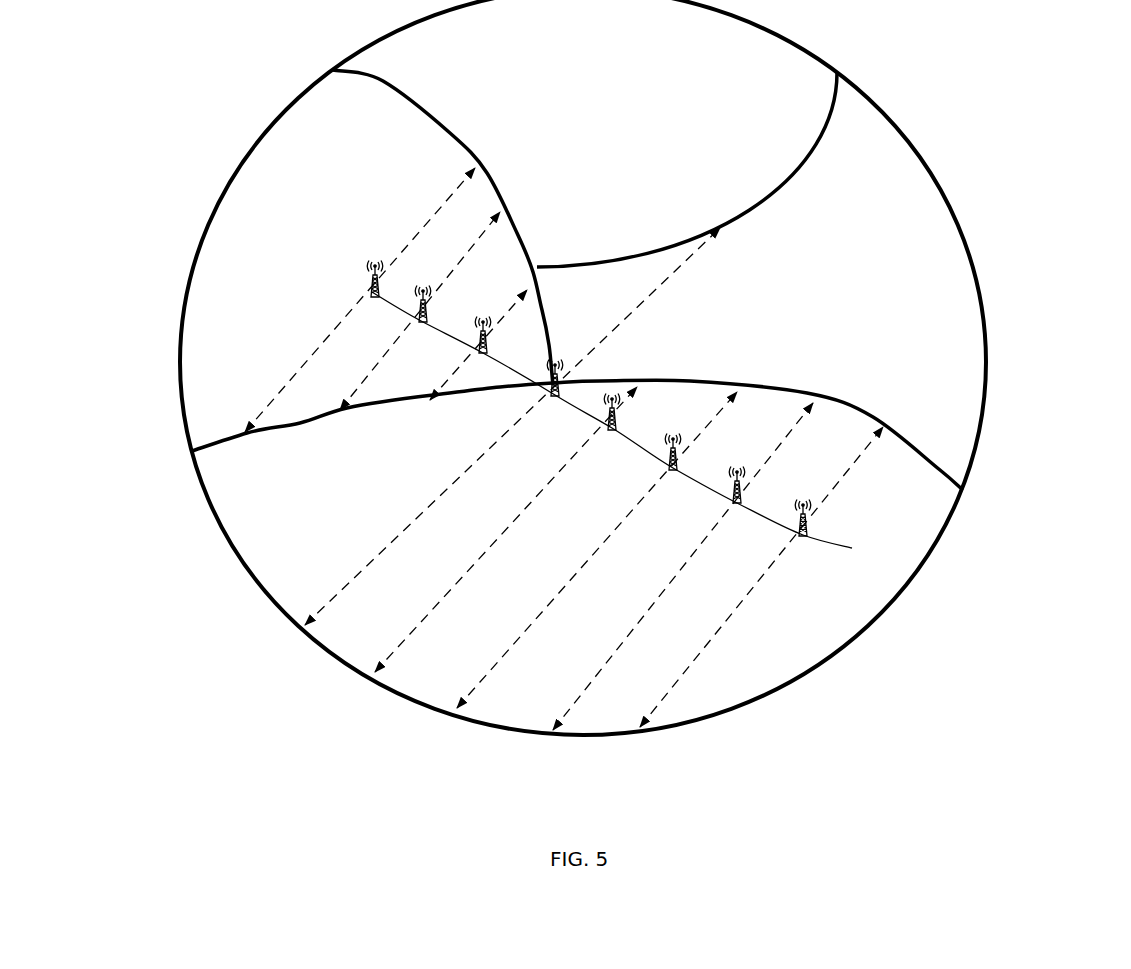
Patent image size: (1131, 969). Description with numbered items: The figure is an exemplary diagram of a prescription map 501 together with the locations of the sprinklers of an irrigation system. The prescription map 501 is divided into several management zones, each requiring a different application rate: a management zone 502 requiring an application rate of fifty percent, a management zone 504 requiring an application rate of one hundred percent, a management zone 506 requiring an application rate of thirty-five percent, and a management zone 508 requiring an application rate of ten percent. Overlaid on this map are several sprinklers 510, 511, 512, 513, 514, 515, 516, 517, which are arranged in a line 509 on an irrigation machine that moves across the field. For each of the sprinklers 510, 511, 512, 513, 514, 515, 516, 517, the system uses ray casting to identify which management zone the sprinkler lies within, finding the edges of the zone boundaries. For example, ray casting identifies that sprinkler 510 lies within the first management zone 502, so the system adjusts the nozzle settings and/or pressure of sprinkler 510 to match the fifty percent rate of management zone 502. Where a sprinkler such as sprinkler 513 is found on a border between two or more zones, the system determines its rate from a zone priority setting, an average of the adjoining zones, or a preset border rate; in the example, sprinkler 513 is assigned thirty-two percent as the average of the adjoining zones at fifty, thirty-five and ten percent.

The prescription map 501 is at (185, 213).
The management zone 502 is at (278, 155).
The management zone 504 is at (722, 75).
The management zone 506 is at (858, 195).
The management zone 508 is at (878, 541).
The line 509 is at (840, 542).
The sprinkler 510 is at (368, 286).
The sprinkler 511 is at (420, 323).
The sprinkler 512 is at (480, 356).
The sprinkler 513 is at (556, 400).
The sprinkler 514 is at (611, 428).
The sprinkler 515 is at (670, 472).
The sprinkler 516 is at (743, 500).
The sprinkler 517 is at (808, 533).